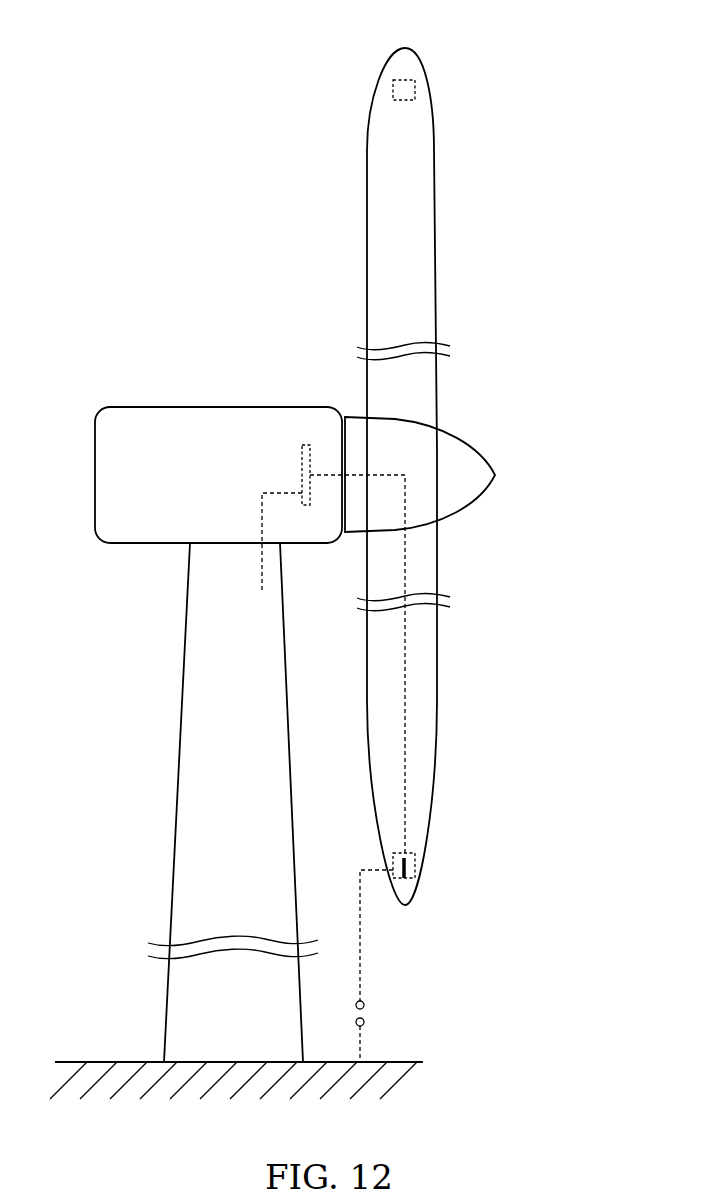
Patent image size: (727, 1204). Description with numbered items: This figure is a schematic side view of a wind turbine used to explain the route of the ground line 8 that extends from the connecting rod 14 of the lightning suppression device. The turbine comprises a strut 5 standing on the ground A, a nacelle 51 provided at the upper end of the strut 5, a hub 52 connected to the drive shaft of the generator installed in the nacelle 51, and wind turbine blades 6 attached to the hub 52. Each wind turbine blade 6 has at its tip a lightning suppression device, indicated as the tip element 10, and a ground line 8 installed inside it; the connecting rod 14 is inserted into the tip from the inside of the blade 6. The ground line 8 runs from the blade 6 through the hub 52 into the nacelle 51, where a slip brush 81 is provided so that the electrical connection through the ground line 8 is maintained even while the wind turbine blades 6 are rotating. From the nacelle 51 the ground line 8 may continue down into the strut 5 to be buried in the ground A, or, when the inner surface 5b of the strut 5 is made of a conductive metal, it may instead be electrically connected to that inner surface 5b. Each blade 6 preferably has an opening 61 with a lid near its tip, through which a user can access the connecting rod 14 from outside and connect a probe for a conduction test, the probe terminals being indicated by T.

The strut 5 is at (186, 681).
The inner surface 5b is at (273, 590).
The nacelle 51 is at (180, 407).
The hub 52 is at (464, 438).
The wind turbine blade 6 is at (437, 260).
The blade tip portion 10 is at (407, 55).
The opening 61 is at (414, 88).
The connecting rod 14 is at (415, 858).
The ground line 8 is at (405, 718).
The slip brush 81 is at (302, 445).
The terminal T is at (365, 1003).
The ground A is at (121, 1062).